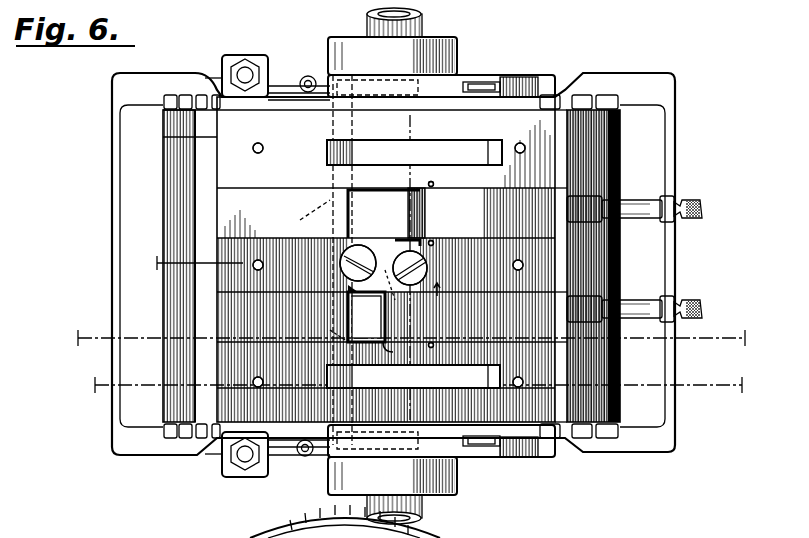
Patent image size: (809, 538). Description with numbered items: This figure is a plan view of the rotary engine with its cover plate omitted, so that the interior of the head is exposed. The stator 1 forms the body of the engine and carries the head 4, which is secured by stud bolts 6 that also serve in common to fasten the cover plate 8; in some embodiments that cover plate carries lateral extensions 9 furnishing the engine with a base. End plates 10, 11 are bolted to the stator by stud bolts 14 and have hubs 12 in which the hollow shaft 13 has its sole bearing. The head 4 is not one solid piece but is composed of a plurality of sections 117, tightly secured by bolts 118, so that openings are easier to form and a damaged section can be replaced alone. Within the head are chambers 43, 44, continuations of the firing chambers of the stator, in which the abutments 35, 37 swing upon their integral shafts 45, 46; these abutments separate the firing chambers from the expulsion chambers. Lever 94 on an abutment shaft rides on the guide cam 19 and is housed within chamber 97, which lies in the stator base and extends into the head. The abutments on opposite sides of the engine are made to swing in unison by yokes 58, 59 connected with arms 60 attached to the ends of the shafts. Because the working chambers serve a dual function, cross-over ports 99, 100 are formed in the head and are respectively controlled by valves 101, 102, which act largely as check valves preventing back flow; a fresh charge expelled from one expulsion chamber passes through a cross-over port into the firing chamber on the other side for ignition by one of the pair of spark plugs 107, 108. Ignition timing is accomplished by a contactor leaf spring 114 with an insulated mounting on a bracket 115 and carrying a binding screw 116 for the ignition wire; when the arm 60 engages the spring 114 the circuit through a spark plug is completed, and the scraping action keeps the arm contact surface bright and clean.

The stator 1 is at (170, 178).
The head 4 is at (217, 338).
The stud bolts 6 is at (256, 143).
The cover plate 8 is at (405, 385).
The lateral extensions 9 is at (125, 80).
The end plate 10 is at (163, 412).
The end plate 11 is at (185, 116).
The hubs 12 is at (455, 45).
The hollow shaft 13 is at (420, 22).
The stud bolts 14 is at (194, 95).
The guide cam 19 is at (419, 285).
The abutment 35 is at (360, 303).
The abutment 37 is at (426, 220).
The chamber 43 is at (400, 352).
The chamber 44 is at (435, 193).
The integral shaft 45 is at (328, 334).
The integral shaft 46 is at (306, 216).
The yoke 58 is at (530, 460).
The yoke 59 is at (530, 80).
The arms 60 is at (455, 84).
The lever 94 is at (358, 150).
The chamber 97 is at (330, 138).
The cross-over port 99 is at (312, 278).
The cross-over port 100 is at (427, 257).
The valve 101 is at (350, 248).
The valve 102 is at (437, 275).
The spark plug 107 is at (640, 308).
The spark plug 108 is at (650, 202).
The leaf spring 114 is at (282, 80).
The bracket 115 is at (240, 55).
The binding screw 116 is at (310, 76).
The sections 117 is at (220, 250).
The bolts 118 is at (232, 97).